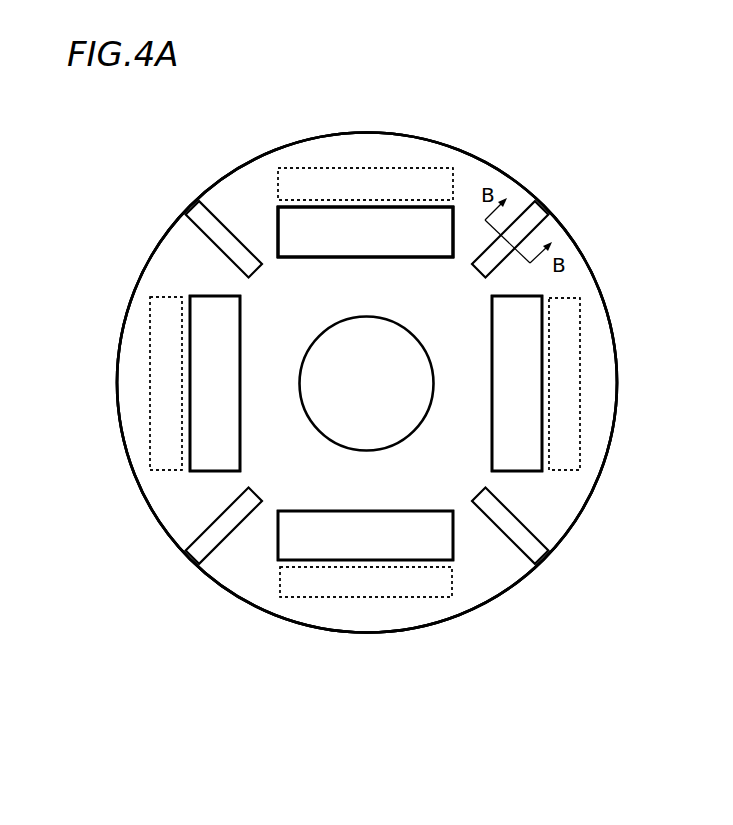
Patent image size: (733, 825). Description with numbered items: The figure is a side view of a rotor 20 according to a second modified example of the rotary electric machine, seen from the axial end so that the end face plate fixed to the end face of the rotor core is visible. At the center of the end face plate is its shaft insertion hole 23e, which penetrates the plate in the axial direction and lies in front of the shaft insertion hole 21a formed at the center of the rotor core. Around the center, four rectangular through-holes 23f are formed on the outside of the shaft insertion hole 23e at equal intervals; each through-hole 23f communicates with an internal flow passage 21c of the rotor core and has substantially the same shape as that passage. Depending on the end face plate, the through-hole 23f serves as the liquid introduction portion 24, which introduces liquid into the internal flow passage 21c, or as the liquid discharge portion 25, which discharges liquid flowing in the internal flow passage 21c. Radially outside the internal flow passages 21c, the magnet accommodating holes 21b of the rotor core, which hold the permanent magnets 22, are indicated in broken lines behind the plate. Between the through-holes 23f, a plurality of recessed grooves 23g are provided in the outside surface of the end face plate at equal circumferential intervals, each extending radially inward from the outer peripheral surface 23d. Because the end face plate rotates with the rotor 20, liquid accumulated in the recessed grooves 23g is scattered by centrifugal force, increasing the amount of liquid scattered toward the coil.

The rotor 20 is at (600, 100).
The shaft insertion hole 21a is at (410, 412).
The magnet accommodating hole 21b is at (338, 182).
The internal flow passage 21c is at (438, 198).
The permanent magnet 22 is at (385, 190).
The outer peripheral surface 23d is at (486, 163).
The shaft insertion hole 23e is at (305, 362).
The through-hole 23f is at (300, 212).
The recessed groove 23g is at (220, 232).
The liquid introduction portion 24 is at (350, 142).
The liquid discharge portion 25 is at (350, 142).